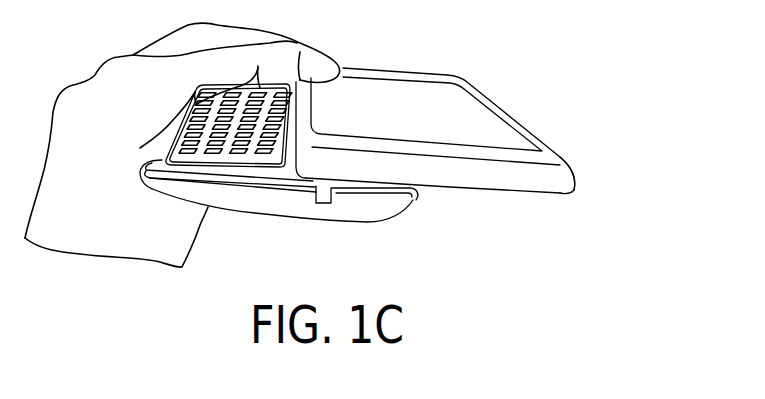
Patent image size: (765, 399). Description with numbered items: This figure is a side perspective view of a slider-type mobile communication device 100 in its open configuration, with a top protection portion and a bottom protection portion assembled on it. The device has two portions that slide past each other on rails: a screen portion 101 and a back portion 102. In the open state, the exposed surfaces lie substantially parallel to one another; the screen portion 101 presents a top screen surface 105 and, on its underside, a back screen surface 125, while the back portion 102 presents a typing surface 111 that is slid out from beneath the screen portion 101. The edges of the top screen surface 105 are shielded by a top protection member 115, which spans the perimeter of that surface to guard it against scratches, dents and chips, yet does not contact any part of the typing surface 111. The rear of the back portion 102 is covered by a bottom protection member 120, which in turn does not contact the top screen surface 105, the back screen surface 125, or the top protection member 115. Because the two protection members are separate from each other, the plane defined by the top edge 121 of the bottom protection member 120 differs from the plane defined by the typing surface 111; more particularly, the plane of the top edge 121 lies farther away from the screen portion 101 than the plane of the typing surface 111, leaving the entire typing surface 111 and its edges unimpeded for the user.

The mobile communication device 100 is at (476, 70).
The screen portion 101 is at (553, 121).
The top screen surface 105 is at (380, 84).
The typing surface 111 is at (160, 152).
The back portion 102 is at (240, 217).
The top protection member 115 is at (555, 185).
The bottom protection member 120 is at (390, 203).
The top edge 121 is at (285, 188).
The back screen surface 125 is at (527, 196).